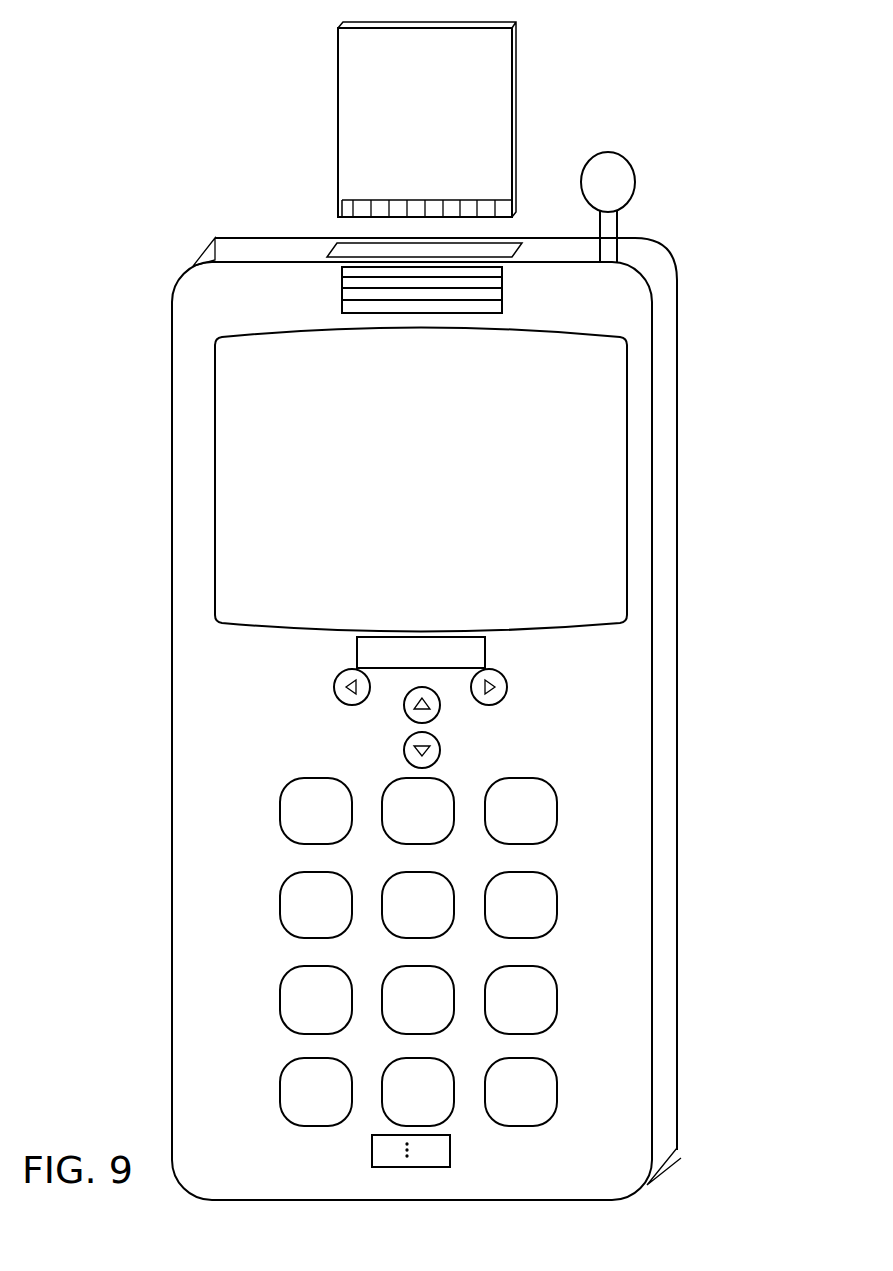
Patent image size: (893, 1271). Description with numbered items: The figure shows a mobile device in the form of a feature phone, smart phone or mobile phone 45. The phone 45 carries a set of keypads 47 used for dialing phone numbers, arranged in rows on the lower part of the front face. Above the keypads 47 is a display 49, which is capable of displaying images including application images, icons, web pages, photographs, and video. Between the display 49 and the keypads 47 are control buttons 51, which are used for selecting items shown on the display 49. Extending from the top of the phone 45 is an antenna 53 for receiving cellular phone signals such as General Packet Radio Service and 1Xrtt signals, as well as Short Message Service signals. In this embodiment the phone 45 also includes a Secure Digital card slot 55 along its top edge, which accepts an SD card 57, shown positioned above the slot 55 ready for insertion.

The mobile phone 45 is at (168, 294).
The keypads 47 is at (577, 808).
The display 49 is at (625, 473).
The control buttons 51 is at (370, 713).
The antenna 53 is at (635, 180).
The Secure Digital (SD) card slot 55 is at (367, 248).
The SD card 57 is at (520, 83).